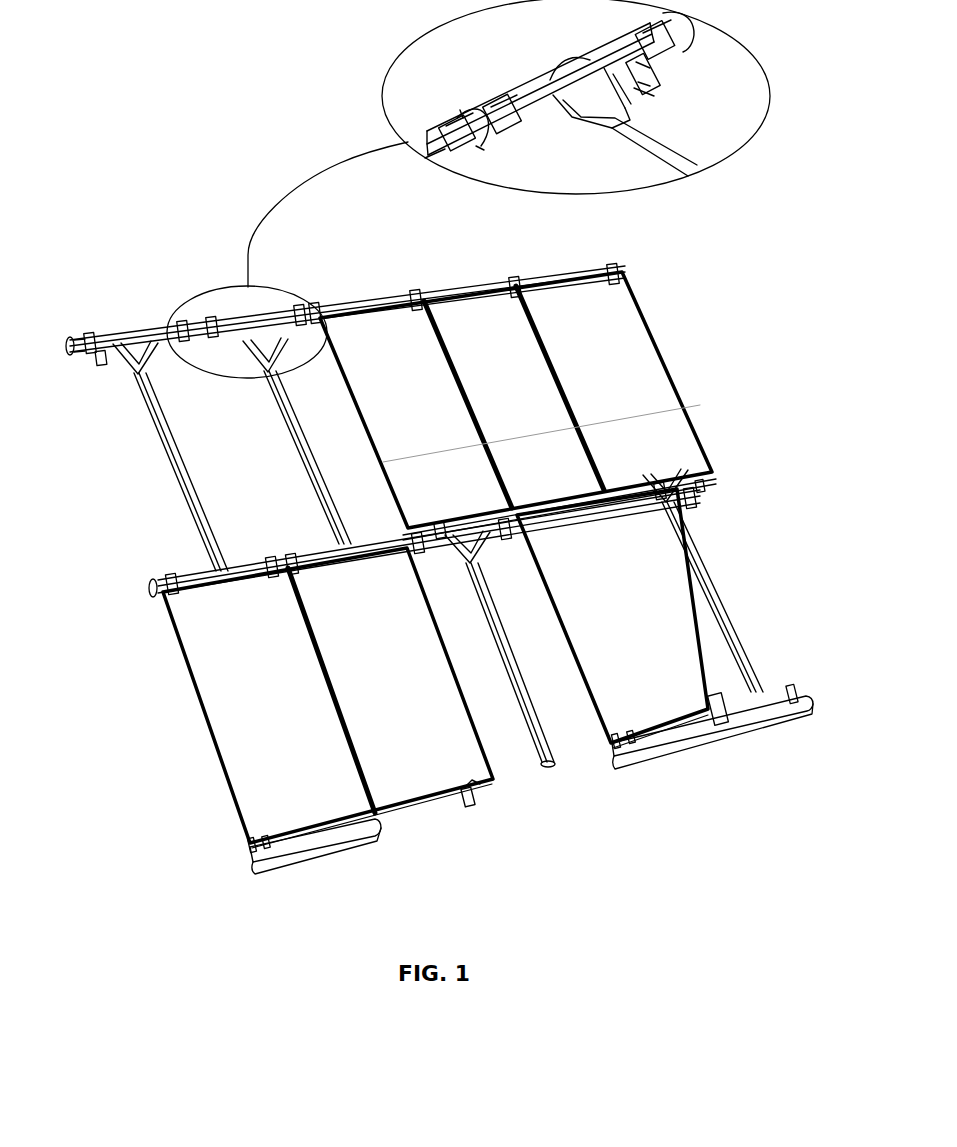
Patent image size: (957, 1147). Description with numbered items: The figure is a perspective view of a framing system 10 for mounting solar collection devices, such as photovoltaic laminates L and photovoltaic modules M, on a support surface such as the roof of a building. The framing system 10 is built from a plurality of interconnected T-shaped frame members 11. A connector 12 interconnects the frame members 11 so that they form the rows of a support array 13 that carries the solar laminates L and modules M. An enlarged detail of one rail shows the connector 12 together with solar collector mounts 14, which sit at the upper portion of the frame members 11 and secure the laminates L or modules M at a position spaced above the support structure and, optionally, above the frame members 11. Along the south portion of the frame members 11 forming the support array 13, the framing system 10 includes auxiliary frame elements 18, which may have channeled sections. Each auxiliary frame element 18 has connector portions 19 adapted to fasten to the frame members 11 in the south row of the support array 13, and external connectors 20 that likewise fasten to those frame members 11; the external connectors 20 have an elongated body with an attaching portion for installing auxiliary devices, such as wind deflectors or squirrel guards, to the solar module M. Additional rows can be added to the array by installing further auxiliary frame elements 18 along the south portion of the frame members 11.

The framing system 10 is at (137, 203).
The frame members 11 is at (708, 550).
The connector 12 is at (483, 140).
The support array 13 is at (682, 249).
The solar collector mount 14 is at (670, 57).
The auxiliary frame element 18 is at (770, 690).
The connector portion 19 is at (763, 688).
The external connector 20 is at (246, 853).
The photovoltaic module M is at (250, 691).
The photovoltaic laminate L is at (197, 720).